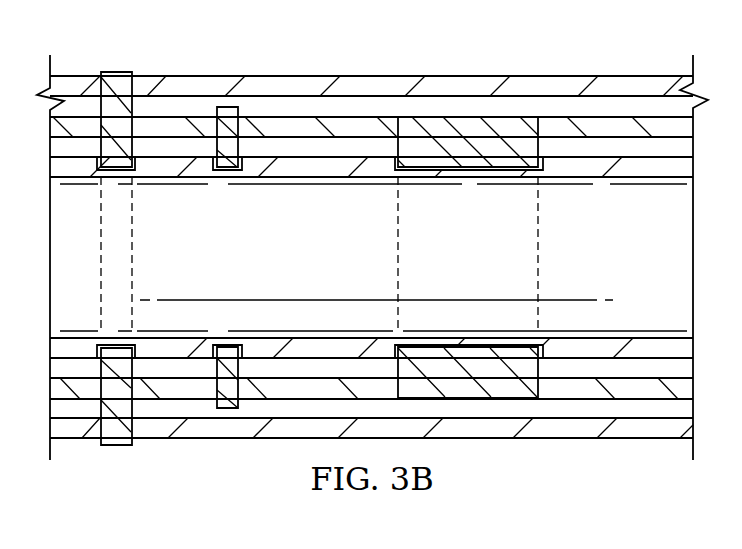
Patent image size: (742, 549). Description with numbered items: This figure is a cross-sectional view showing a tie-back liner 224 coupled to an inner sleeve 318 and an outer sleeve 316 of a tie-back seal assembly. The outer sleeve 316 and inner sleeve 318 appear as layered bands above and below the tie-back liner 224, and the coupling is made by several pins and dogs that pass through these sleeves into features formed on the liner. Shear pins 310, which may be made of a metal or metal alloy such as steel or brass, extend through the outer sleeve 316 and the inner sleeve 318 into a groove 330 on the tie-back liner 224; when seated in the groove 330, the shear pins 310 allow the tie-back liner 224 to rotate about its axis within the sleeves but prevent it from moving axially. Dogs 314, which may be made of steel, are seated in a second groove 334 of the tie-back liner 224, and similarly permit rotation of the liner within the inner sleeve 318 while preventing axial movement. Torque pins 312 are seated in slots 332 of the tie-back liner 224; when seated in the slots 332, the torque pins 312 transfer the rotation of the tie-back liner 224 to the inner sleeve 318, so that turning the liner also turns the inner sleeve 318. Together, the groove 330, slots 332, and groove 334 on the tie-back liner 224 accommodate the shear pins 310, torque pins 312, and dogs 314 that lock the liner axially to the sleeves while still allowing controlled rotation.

The shear pins 310 is at (115, 78).
The torque pins 312 is at (225, 112).
The dogs 314 is at (470, 125).
The outer sleeve 316 is at (632, 83).
The inner sleeve 318 is at (365, 125).
The tie-back liner 224 is at (600, 168).
The groove 330 is at (114, 172).
The slots 332 is at (222, 170).
The groove 334 is at (462, 170).